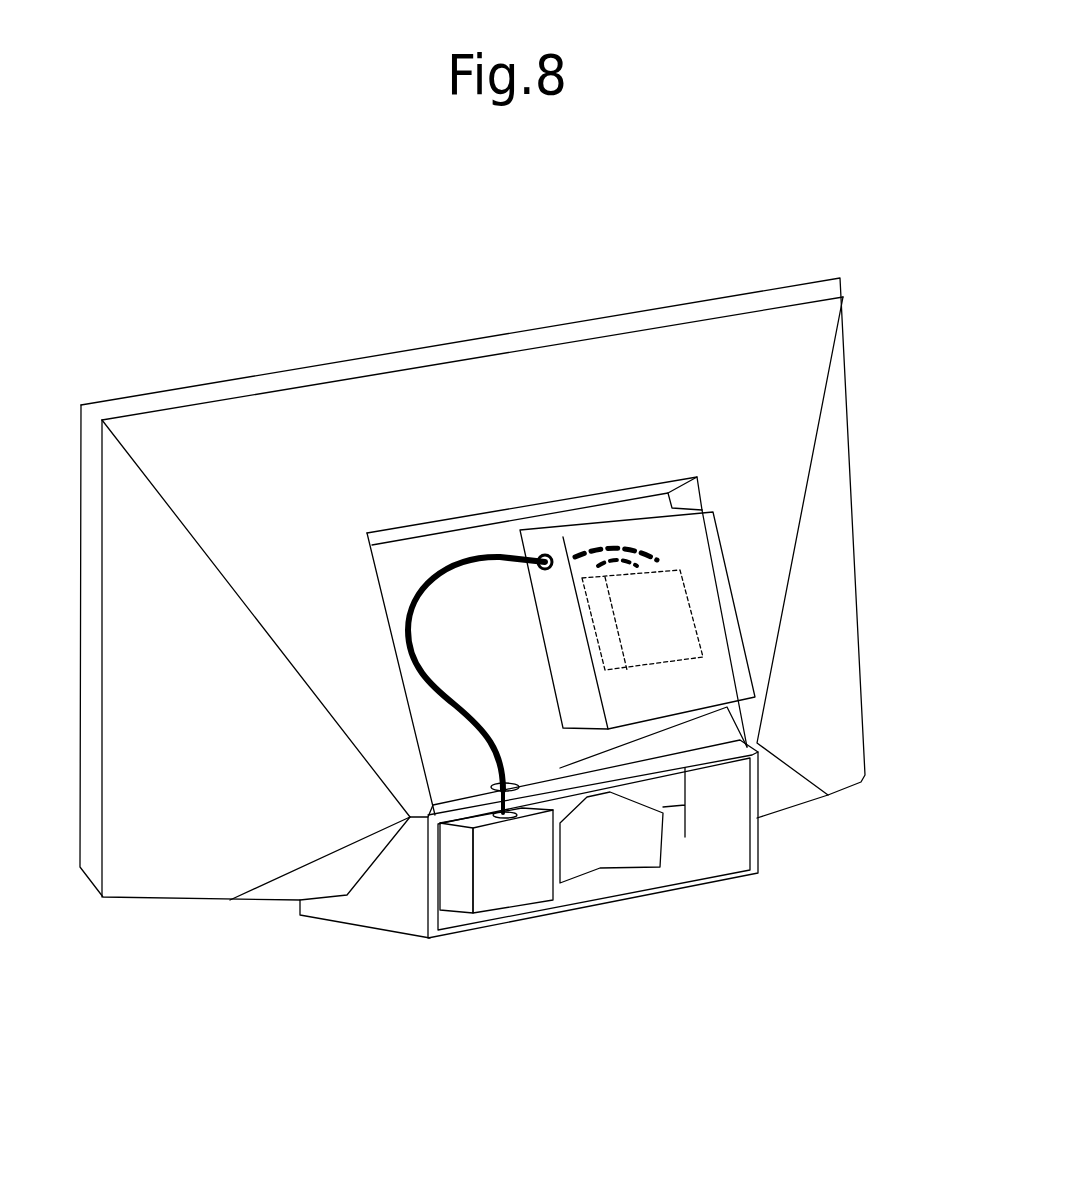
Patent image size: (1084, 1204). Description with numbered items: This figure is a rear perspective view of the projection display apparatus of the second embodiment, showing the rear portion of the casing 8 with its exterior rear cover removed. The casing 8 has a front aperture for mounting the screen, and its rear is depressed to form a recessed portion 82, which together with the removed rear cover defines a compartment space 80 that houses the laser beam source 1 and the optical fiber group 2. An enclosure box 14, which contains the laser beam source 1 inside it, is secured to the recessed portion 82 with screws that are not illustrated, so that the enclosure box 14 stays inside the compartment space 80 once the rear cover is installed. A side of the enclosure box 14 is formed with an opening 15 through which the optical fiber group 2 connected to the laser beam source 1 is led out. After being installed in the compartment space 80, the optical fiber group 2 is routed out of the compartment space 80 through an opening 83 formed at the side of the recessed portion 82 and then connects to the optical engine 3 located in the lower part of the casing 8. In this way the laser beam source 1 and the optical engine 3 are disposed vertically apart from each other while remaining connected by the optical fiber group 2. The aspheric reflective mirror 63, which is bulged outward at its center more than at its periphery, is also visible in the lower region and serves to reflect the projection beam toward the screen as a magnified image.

The laser beam source 1 is at (667, 635).
The optical fiber group 2 is at (430, 583).
The optical engine 3 is at (520, 905).
The casing 8 is at (773, 332).
The enclosure box 14 is at (757, 743).
The opening 15 is at (553, 550).
The aspheric reflective mirror 63 is at (640, 868).
The compartment space 80 is at (208, 828).
The recessed portion 82 is at (471, 542).
The opening 83 is at (421, 818).